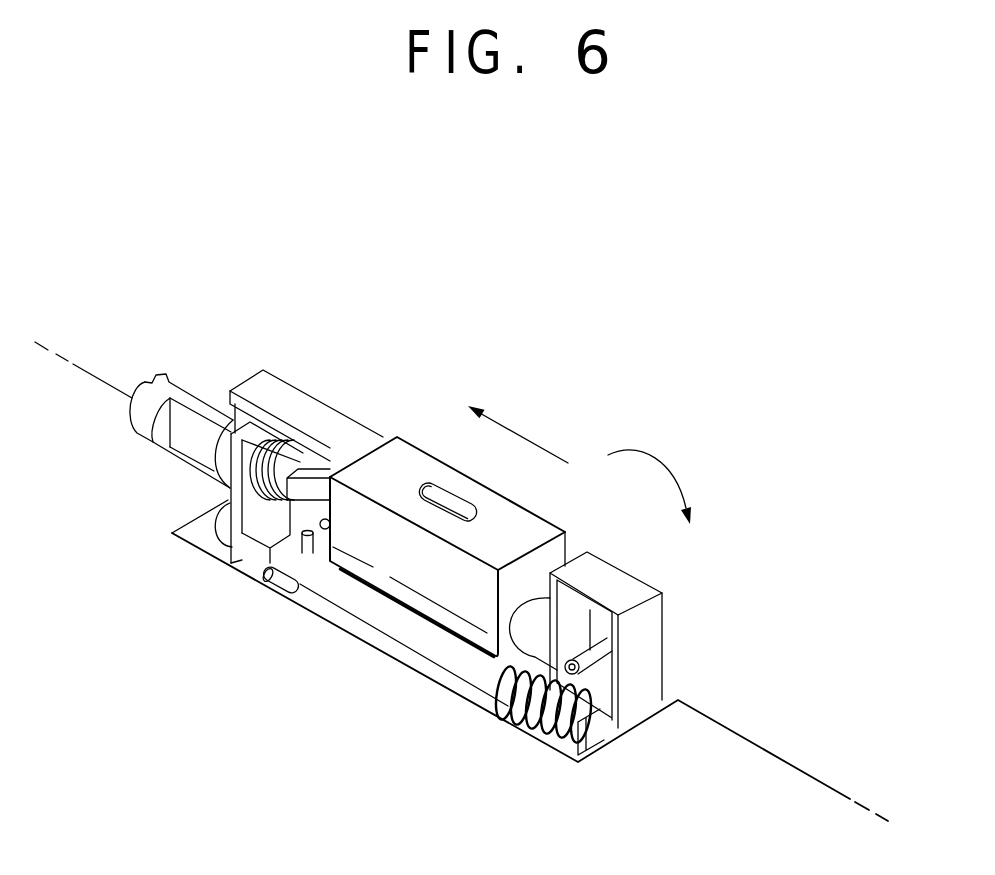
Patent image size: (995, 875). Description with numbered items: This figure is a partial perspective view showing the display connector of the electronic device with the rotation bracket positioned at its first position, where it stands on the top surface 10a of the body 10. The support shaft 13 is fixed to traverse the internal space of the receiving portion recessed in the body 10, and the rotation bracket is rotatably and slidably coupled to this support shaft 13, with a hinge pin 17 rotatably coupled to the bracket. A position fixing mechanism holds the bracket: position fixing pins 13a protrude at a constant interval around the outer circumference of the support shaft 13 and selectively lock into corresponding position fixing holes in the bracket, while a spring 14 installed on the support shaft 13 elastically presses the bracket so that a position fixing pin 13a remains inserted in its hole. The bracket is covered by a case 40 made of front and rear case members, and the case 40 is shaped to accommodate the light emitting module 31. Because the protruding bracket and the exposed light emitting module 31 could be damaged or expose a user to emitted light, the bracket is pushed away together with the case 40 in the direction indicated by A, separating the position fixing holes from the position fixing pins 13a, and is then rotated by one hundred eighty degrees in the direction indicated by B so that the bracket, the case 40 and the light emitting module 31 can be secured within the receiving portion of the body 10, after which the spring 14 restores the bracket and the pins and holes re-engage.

The body 10 is at (745, 688).
The top surface 10a is at (793, 793).
The support shaft 13 is at (440, 653).
The position fixing pin 13a is at (275, 592).
The spring 14 is at (523, 714).
The hinge pin 17 is at (187, 350).
The light emitting module 31 is at (383, 458).
The case 40 is at (655, 610).
The pushing direction A is at (515, 432).
The rotation direction B is at (658, 457).